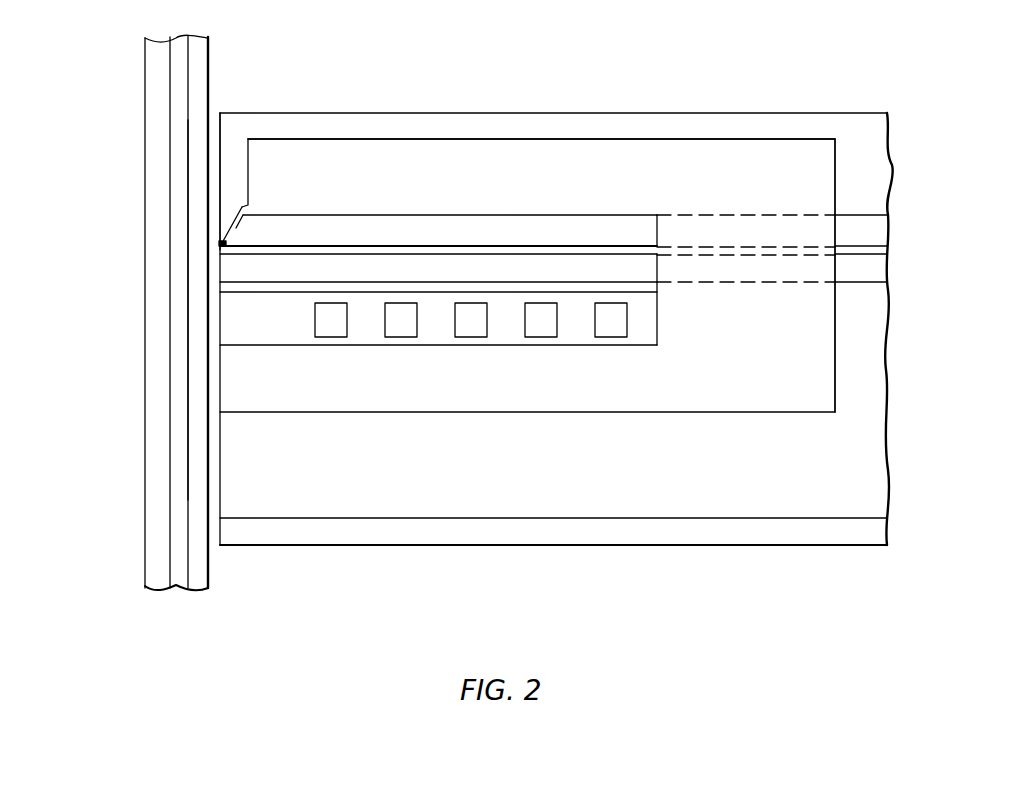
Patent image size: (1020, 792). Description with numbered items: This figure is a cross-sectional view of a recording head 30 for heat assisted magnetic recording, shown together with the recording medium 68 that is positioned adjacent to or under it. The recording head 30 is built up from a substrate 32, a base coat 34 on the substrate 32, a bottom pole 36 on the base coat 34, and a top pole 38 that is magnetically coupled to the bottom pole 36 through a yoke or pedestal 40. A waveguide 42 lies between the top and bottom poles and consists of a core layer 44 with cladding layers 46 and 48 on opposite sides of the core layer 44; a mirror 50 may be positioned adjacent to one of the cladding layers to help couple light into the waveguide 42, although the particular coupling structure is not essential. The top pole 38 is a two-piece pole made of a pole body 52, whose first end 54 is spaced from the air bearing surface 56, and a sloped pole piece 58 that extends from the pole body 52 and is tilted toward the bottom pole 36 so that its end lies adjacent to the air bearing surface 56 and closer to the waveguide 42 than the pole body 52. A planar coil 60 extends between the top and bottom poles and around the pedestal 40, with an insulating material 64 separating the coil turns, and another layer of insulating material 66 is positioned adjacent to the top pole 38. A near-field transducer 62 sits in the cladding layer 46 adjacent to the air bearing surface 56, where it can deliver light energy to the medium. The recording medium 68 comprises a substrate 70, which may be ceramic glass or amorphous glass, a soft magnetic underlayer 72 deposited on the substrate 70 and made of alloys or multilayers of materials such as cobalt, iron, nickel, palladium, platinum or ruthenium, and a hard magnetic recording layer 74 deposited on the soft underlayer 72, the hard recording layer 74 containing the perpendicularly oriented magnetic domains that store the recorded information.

The recording head 30 is at (828, 89).
The substrate 32 is at (758, 535).
The base coat 34 is at (875, 500).
The bottom pole 36 is at (505, 397).
The top pole 38 is at (492, 155).
The yoke or pedestal 40 is at (820, 350).
The waveguide 42 is at (563, 209).
The core layer 44 is at (430, 248).
The cladding layer 46 is at (625, 225).
The cladding layer 48 is at (650, 268).
The mirror 50 is at (640, 288).
The pole body 52 is at (386, 148).
The first end 54 is at (250, 148).
The air bearing surface 56 is at (220, 165).
The sloped pole piece 58 is at (231, 223).
The planar coil 60 is at (334, 335).
The near-field transducer 62 is at (222, 244).
The insulating material 64 is at (575, 327).
The layer of insulating material 66 is at (308, 127).
The recording medium 68 is at (118, 81).
The substrate 70 is at (153, 512).
The soft magnetic underlayer 72 is at (180, 586).
The hard magnetic recording layer 74 is at (200, 575).